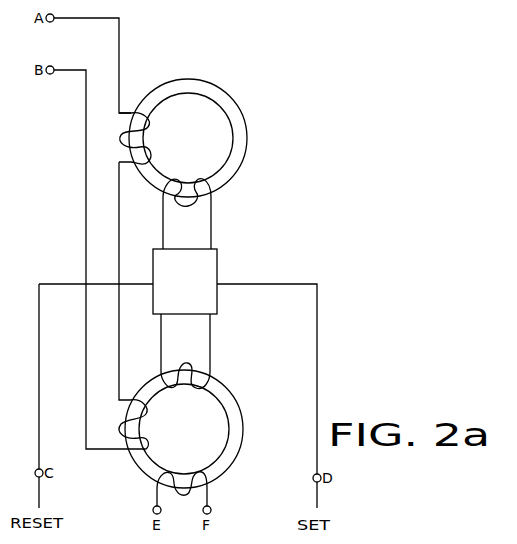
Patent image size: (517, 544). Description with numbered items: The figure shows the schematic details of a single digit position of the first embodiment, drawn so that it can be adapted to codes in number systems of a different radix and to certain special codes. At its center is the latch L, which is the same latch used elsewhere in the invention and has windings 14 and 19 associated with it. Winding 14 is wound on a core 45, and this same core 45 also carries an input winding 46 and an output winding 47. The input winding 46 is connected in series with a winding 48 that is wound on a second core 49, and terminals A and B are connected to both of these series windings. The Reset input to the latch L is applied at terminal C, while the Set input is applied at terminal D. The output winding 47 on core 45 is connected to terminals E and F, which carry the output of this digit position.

The latch L is at (217, 258).
The core 49 is at (242, 120).
The winding 48 is at (149, 127).
The winding 19 is at (175, 179).
The core 45 is at (240, 402).
The winding 14 is at (172, 389).
The input winding 46 is at (144, 420).
The output winding 47 is at (172, 467).